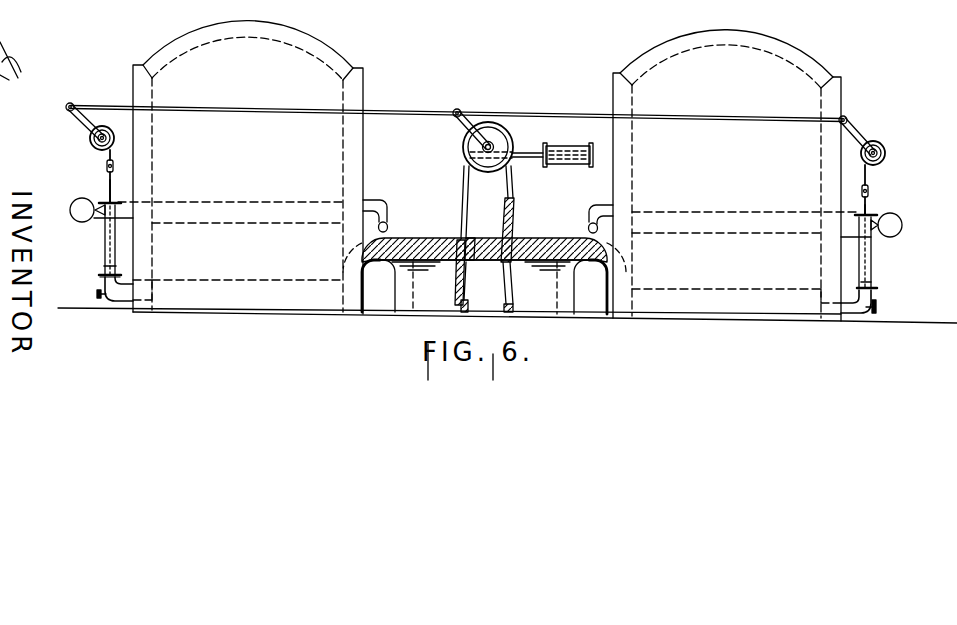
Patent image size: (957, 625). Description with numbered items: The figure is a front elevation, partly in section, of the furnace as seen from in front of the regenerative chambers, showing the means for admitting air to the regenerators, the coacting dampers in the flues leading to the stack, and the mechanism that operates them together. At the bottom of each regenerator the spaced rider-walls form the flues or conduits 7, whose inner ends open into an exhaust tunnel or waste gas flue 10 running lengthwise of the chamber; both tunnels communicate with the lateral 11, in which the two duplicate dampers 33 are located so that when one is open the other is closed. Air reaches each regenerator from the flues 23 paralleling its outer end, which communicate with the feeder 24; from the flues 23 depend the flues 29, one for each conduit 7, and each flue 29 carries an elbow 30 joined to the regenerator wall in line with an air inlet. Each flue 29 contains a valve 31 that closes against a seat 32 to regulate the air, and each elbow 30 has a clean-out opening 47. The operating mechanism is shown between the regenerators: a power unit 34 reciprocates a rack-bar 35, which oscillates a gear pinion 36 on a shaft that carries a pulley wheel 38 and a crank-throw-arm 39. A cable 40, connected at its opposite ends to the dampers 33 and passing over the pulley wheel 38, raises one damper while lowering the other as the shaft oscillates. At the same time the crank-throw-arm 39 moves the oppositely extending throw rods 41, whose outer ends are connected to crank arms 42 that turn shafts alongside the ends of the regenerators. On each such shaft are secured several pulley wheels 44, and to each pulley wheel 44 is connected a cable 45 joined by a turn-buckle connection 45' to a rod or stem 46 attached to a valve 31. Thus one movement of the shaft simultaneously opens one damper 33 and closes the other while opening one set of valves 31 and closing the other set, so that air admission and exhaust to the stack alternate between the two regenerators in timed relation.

The flues or conduits 7 is at (487, 171).
The exhaust tunnel or waste gas flue 10 is at (484, 287).
The lateral 11 is at (421, 263).
The flues 23 is at (77, 219).
The feeder 24 is at (125, 202).
The flue 29 is at (105, 240).
The elbow 30 is at (117, 294).
The valve 31 is at (114, 267).
The seat 32 is at (105, 277).
The damper 33 is at (517, 223).
The power unit 34 is at (570, 151).
The rack-bar 35 is at (517, 153).
The gear pinion 36 is at (496, 144).
The pulley wheel 38 is at (494, 125).
The crank-throw-arm 39 is at (462, 121).
The cable 40 is at (463, 193).
The throw rods 41 is at (196, 111).
The crank arm 42 is at (79, 118).
The pulley wheel 44 is at (93, 145).
The cable 45 is at (502, 180).
The turn-buckle connection 45' is at (490, 178).
The rod or stem 46 is at (108, 184).
The clean-out opening 47 is at (96, 294).